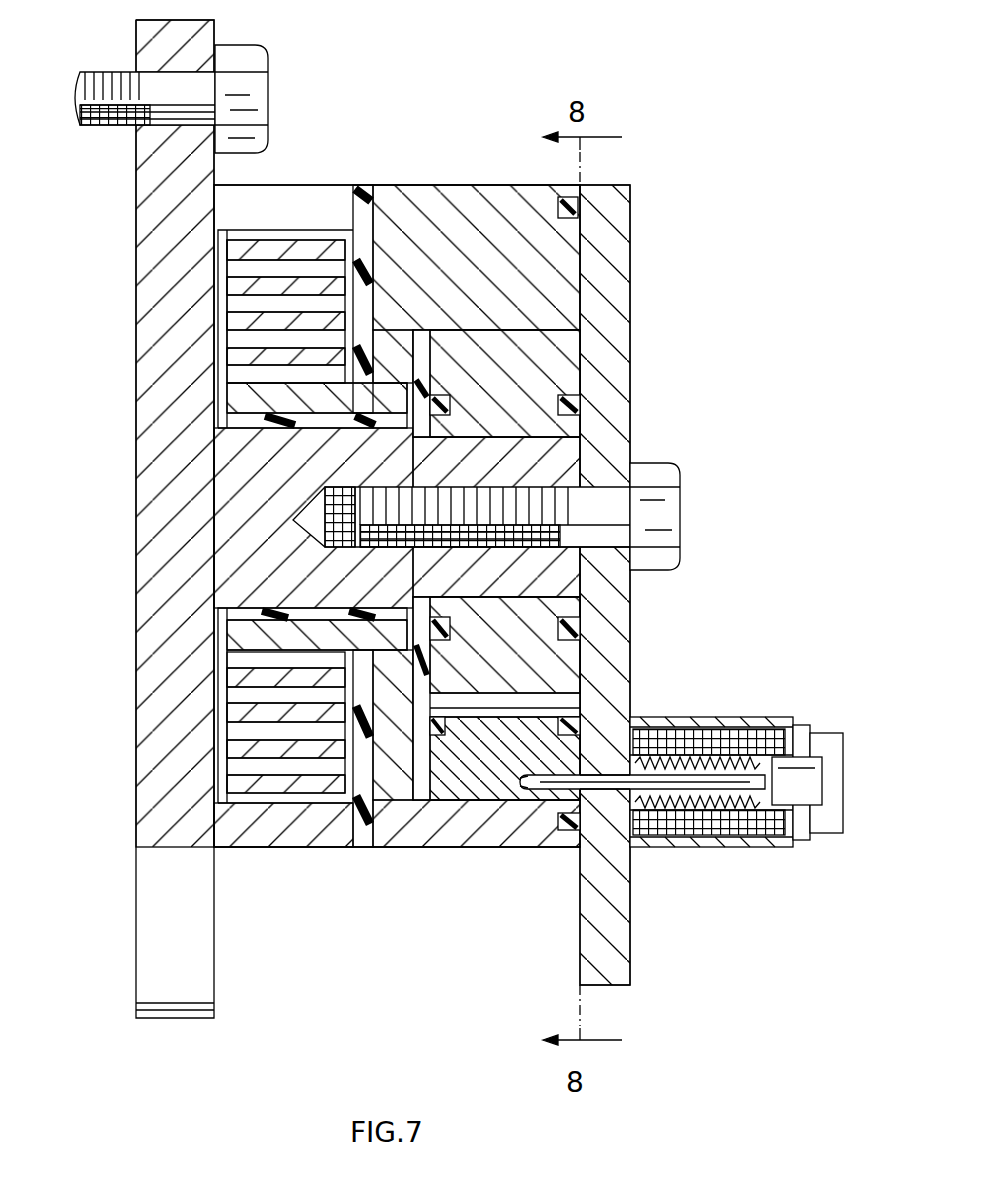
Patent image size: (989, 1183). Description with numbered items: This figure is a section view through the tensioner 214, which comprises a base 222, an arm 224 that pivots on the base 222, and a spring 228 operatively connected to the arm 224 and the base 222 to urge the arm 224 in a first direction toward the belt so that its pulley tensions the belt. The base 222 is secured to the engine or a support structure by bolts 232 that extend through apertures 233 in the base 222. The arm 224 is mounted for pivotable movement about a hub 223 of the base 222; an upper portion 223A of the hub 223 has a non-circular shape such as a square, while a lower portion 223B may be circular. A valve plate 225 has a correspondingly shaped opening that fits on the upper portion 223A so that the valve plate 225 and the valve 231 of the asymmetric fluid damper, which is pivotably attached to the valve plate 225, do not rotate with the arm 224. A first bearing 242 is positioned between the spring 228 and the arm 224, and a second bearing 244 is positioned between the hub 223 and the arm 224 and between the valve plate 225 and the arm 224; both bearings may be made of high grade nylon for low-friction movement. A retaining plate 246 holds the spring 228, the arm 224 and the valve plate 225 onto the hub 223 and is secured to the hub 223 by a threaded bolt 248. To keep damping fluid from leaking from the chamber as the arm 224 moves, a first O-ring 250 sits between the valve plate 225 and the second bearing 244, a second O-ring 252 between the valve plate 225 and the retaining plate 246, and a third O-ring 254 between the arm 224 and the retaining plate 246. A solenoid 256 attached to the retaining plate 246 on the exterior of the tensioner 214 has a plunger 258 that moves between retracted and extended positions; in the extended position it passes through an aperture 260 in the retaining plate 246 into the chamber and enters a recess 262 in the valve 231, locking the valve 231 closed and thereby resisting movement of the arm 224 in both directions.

The tensioner 214 is at (727, 265).
The base 222 is at (145, 352).
The hub 223 is at (290, 578).
The upper portion of the hub 223A is at (557, 580).
The lower portion of the hub 223B is at (268, 468).
The arm 224 is at (440, 197).
The valve plate 225 is at (567, 660).
The spring 228 is at (297, 247).
The valve 231 is at (527, 737).
The bolts 232 is at (260, 62).
The apertures 233 is at (153, 63).
The first bearing 242 is at (358, 848).
The second bearing 244 is at (250, 420).
The retaining plate 246 is at (640, 323).
The threaded bolt 248 is at (670, 477).
The first O-ring 250 is at (473, 390).
The second O-ring 252 is at (577, 407).
The third O-ring 254 is at (567, 833).
The solenoid 256 is at (760, 717).
The plunger 258 is at (560, 805).
The aperture 260 is at (588, 850).
The recess 262 is at (525, 790).